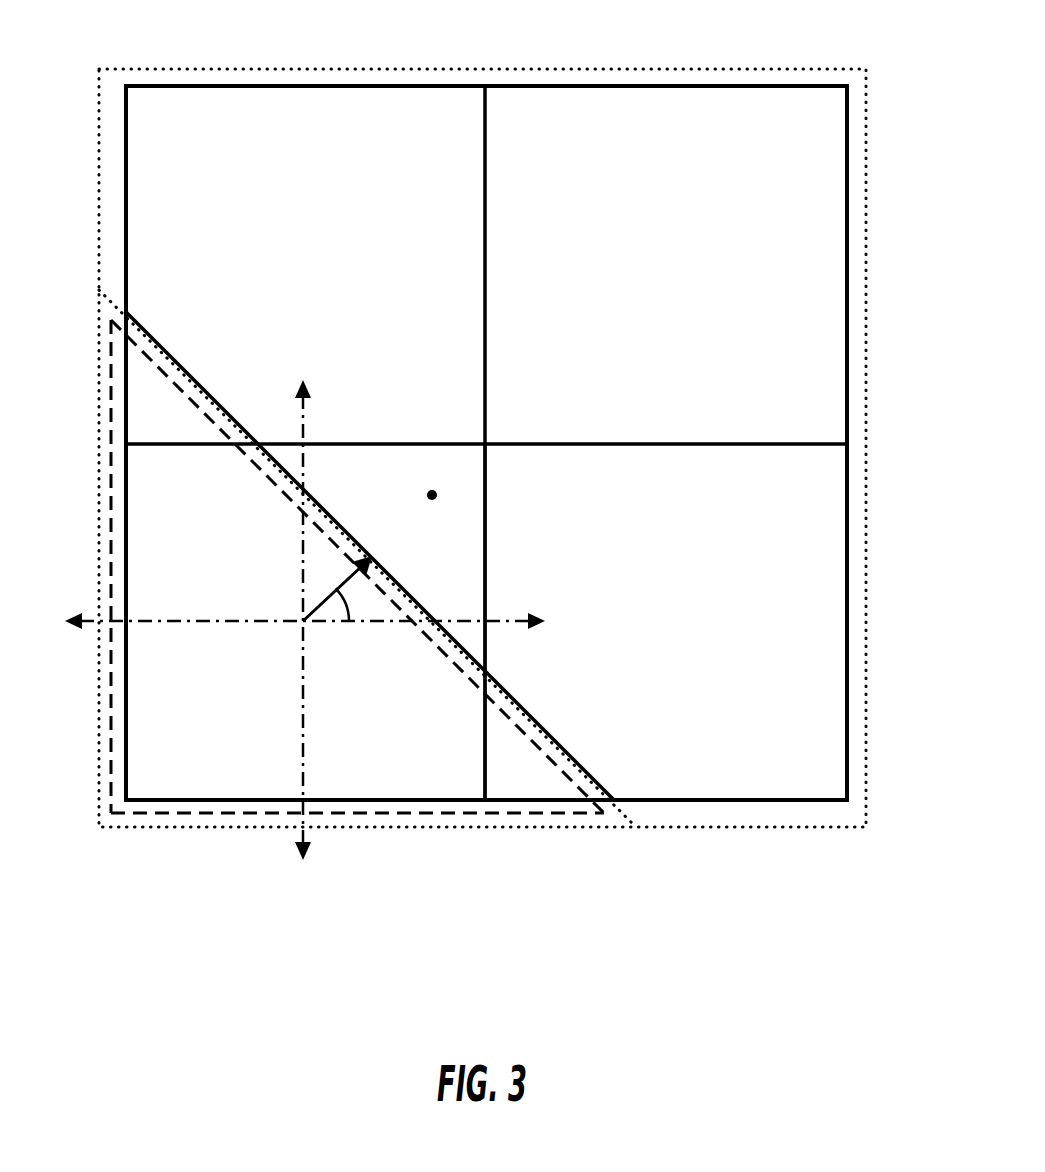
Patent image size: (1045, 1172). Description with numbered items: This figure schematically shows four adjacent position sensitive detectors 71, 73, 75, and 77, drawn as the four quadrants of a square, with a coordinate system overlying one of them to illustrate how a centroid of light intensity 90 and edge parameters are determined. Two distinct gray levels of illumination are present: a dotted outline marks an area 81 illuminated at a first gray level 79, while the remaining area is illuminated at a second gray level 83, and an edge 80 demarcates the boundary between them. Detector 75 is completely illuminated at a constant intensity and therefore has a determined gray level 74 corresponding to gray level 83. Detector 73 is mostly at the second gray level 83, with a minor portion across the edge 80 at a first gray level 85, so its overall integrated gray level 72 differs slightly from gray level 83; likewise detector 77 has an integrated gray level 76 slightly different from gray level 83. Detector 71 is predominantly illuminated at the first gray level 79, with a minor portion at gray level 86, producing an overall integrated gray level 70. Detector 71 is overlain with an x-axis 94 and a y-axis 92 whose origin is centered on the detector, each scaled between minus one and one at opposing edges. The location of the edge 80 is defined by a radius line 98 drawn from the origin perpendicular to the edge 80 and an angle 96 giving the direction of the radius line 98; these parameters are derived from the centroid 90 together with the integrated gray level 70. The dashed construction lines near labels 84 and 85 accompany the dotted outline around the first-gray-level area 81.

The overall integrated gray level 70 is at (178, 800).
The position sensitive detector 71 is at (142, 528).
The overall integrated gray level 72 is at (847, 545).
The position sensitive detector 73 is at (824, 615).
The determined gray level 74 is at (603, 86).
The position sensitive detector 75 is at (685, 117).
The overall integrated gray level 76 is at (293, 86).
The position sensitive detector 77 is at (413, 114).
The first gray level 79 is at (86, 343).
The edge 80 is at (548, 733).
The illuminated area 81 is at (106, 722).
The second gray level 83 is at (96, 212).
The dashed diagonal boundary 84 is at (157, 405).
The first gray level portion 85 is at (530, 780).
The gray level of minor portion 86 is at (463, 540).
The centroid of light intensity 90 is at (428, 495).
The y-axis 92 is at (300, 548).
The x-axis 94 is at (197, 620).
The angle 96 is at (365, 605).
The radius line 98 is at (305, 604).